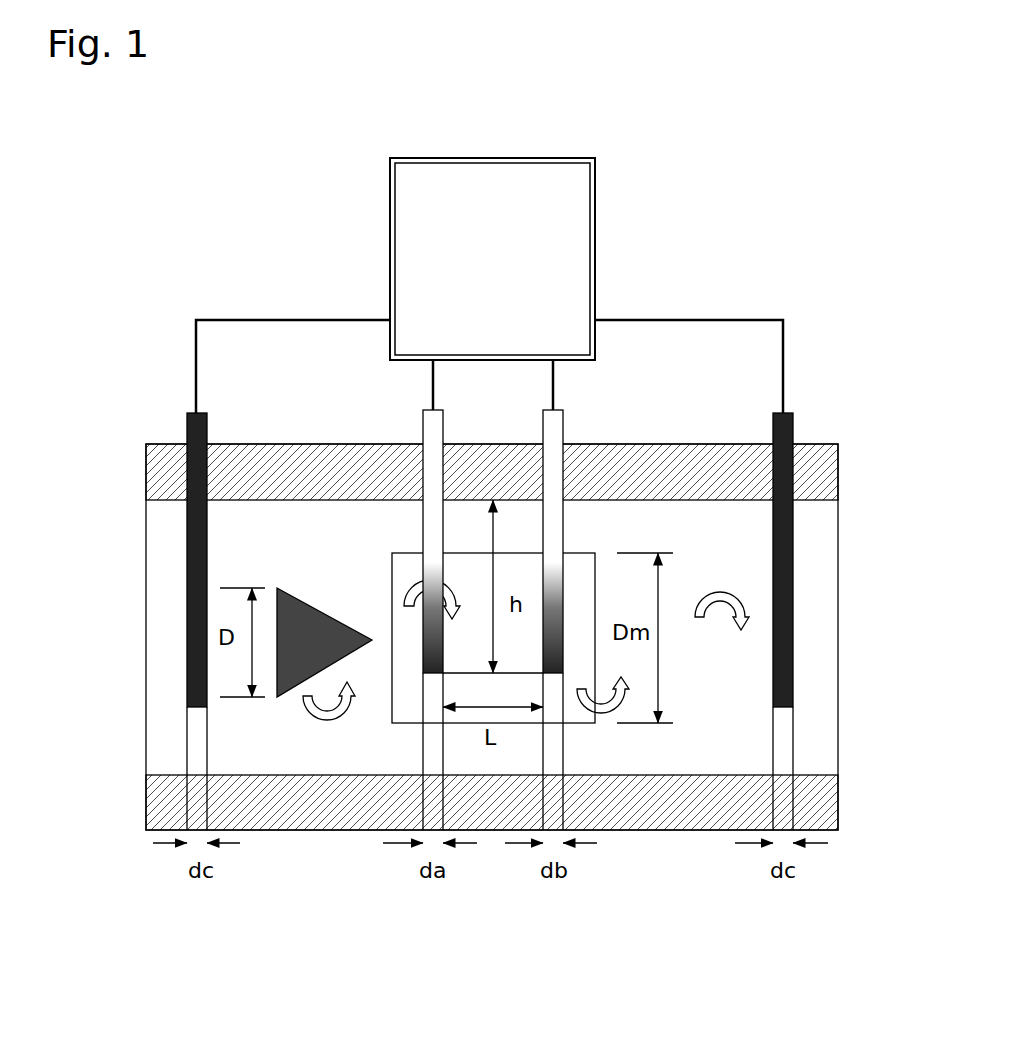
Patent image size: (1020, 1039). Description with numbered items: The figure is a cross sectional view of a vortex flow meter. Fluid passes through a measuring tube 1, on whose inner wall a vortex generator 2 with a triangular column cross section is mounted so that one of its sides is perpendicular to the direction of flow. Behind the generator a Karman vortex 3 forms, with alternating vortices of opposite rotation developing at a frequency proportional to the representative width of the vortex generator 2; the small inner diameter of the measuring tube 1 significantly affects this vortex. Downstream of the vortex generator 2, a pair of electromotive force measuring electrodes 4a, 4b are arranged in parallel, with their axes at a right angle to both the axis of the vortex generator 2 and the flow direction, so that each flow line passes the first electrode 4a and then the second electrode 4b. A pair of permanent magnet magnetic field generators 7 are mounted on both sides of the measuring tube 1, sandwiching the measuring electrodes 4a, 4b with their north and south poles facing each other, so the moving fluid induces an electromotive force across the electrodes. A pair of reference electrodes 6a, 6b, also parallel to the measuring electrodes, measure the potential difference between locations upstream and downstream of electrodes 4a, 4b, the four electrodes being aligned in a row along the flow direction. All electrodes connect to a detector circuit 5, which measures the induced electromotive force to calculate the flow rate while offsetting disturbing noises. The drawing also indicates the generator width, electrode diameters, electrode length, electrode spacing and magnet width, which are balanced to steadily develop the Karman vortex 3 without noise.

The measuring tube 1 is at (158, 483).
The vortex generator 2 is at (322, 635).
The Karman vortex 3 is at (333, 713).
The electromotive force measuring electrode 4a is at (437, 503).
The electromotive force measuring electrode 4b is at (553, 503).
The detector circuit 5 is at (573, 277).
The reference electrode 6a is at (192, 417).
The reference electrode 6b is at (793, 423).
The magnetic field generator 7 is at (410, 710).